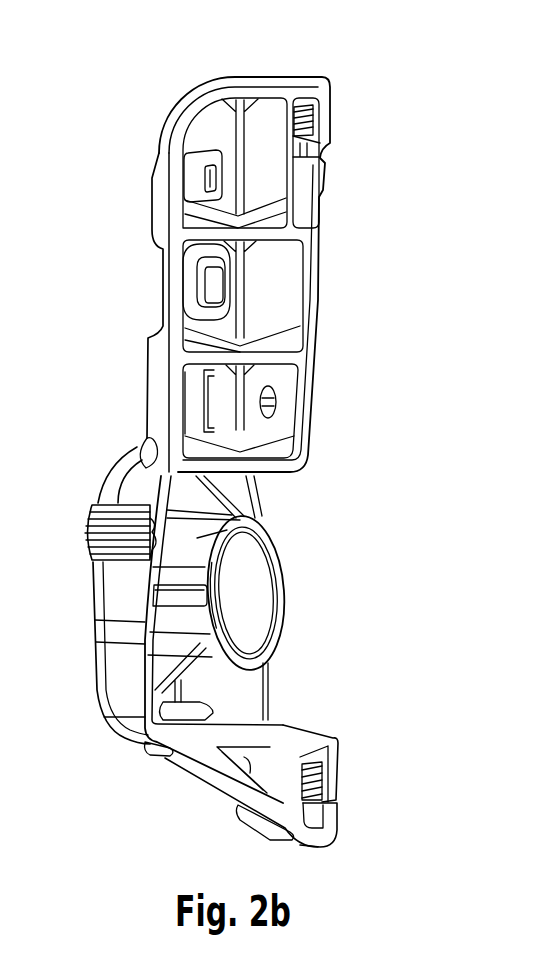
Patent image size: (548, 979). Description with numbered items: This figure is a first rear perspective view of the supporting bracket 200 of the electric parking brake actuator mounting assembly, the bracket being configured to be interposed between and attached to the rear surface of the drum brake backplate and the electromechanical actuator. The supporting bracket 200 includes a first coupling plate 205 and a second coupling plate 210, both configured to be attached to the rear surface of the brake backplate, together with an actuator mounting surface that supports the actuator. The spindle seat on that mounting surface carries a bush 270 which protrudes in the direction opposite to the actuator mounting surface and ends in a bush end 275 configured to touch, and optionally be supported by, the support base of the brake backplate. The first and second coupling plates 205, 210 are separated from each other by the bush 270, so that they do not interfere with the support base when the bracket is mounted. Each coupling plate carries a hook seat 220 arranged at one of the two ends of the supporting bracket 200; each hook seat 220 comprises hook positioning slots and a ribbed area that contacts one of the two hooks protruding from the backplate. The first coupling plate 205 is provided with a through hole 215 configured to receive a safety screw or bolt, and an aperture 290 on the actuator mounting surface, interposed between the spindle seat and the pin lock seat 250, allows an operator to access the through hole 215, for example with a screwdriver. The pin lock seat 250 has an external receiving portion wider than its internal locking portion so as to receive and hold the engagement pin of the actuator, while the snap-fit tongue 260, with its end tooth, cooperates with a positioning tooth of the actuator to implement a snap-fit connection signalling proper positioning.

The supporting bracket 200 is at (323, 63).
The first coupling plate 205 is at (318, 291).
The second coupling plate 210 is at (329, 778).
The through hole 215 is at (274, 407).
The hook seat 220 is at (331, 160).
The pin lock seat 250 is at (153, 276).
The snap-fit tongue 260 is at (196, 182).
The bush 270 is at (270, 530).
The bush end 275 is at (278, 618).
The aperture 290 is at (183, 389).